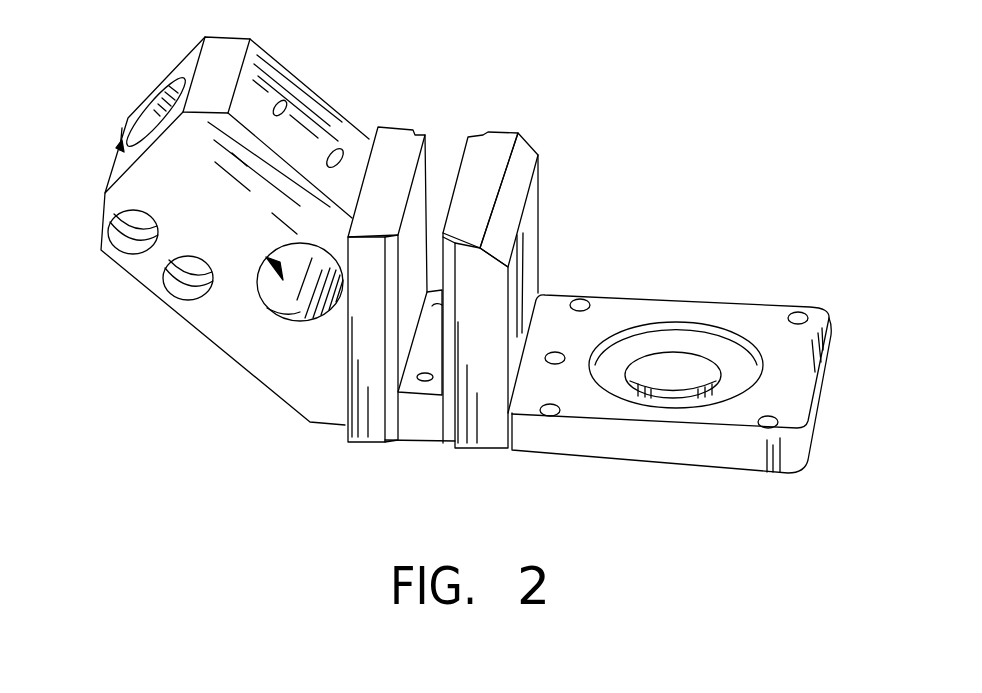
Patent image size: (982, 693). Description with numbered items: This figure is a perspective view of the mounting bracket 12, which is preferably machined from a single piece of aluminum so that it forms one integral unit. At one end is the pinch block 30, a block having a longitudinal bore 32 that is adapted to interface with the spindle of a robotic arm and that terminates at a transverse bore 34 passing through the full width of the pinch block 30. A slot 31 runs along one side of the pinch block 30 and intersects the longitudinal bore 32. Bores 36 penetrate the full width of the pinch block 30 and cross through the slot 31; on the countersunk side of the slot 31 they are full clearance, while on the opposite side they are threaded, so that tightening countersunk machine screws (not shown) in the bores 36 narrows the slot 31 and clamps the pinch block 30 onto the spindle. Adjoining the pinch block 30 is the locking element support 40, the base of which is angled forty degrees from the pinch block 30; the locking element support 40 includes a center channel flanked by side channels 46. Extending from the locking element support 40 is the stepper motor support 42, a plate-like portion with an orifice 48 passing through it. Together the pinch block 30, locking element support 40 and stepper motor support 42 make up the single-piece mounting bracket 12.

The mounting bracket 12 is at (570, 95).
The pinch block 30 is at (349, 121).
The slot 31 is at (120, 147).
The longitudinal bore 32 is at (148, 113).
The transverse bore 34 is at (287, 305).
The bores 36 is at (122, 247).
The locking element support 40 is at (443, 158).
The stepper motor support 42 is at (817, 315).
The side channels 46 is at (420, 132).
The orifice 48 is at (673, 360).